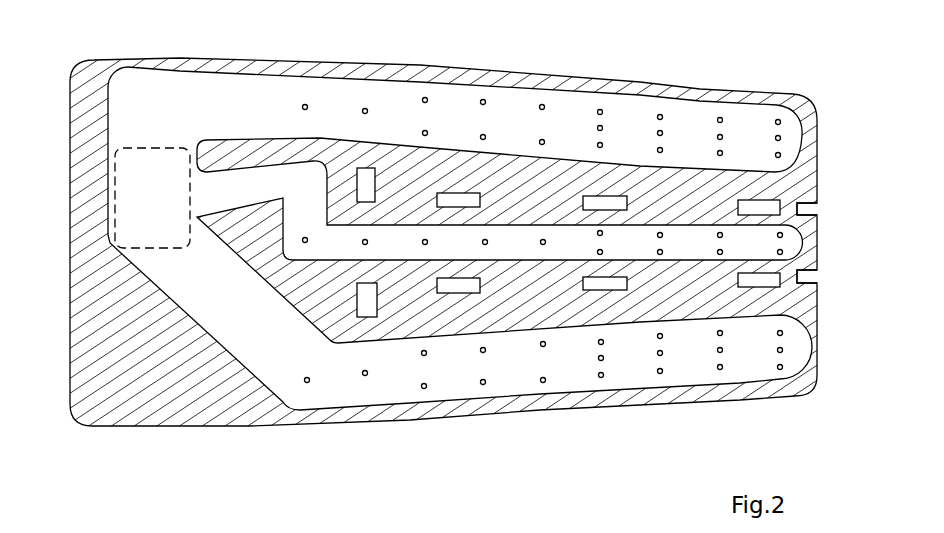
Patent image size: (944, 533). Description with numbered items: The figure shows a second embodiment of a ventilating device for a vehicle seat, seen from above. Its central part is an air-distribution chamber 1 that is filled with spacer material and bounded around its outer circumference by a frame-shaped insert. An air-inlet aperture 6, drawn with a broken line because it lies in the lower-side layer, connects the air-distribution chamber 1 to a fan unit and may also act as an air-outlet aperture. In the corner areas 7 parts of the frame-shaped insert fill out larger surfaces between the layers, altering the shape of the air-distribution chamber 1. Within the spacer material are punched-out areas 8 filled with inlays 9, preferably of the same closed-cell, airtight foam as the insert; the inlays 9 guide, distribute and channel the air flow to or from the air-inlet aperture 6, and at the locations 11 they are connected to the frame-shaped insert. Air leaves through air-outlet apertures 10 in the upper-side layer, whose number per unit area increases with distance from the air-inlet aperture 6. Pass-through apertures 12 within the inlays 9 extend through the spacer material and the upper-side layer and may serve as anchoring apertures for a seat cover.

The air-distribution chamber 1 is at (131, 103).
The air-inlet aperture 6 is at (167, 149).
The corner areas 7 is at (187, 410).
The punched-out areas 8 is at (366, 148).
The inlays 9 is at (323, 153).
The air-outlet apertures 10 is at (660, 117).
The connection locations 11 is at (757, 208).
The pass-through apertures 12 is at (373, 288).